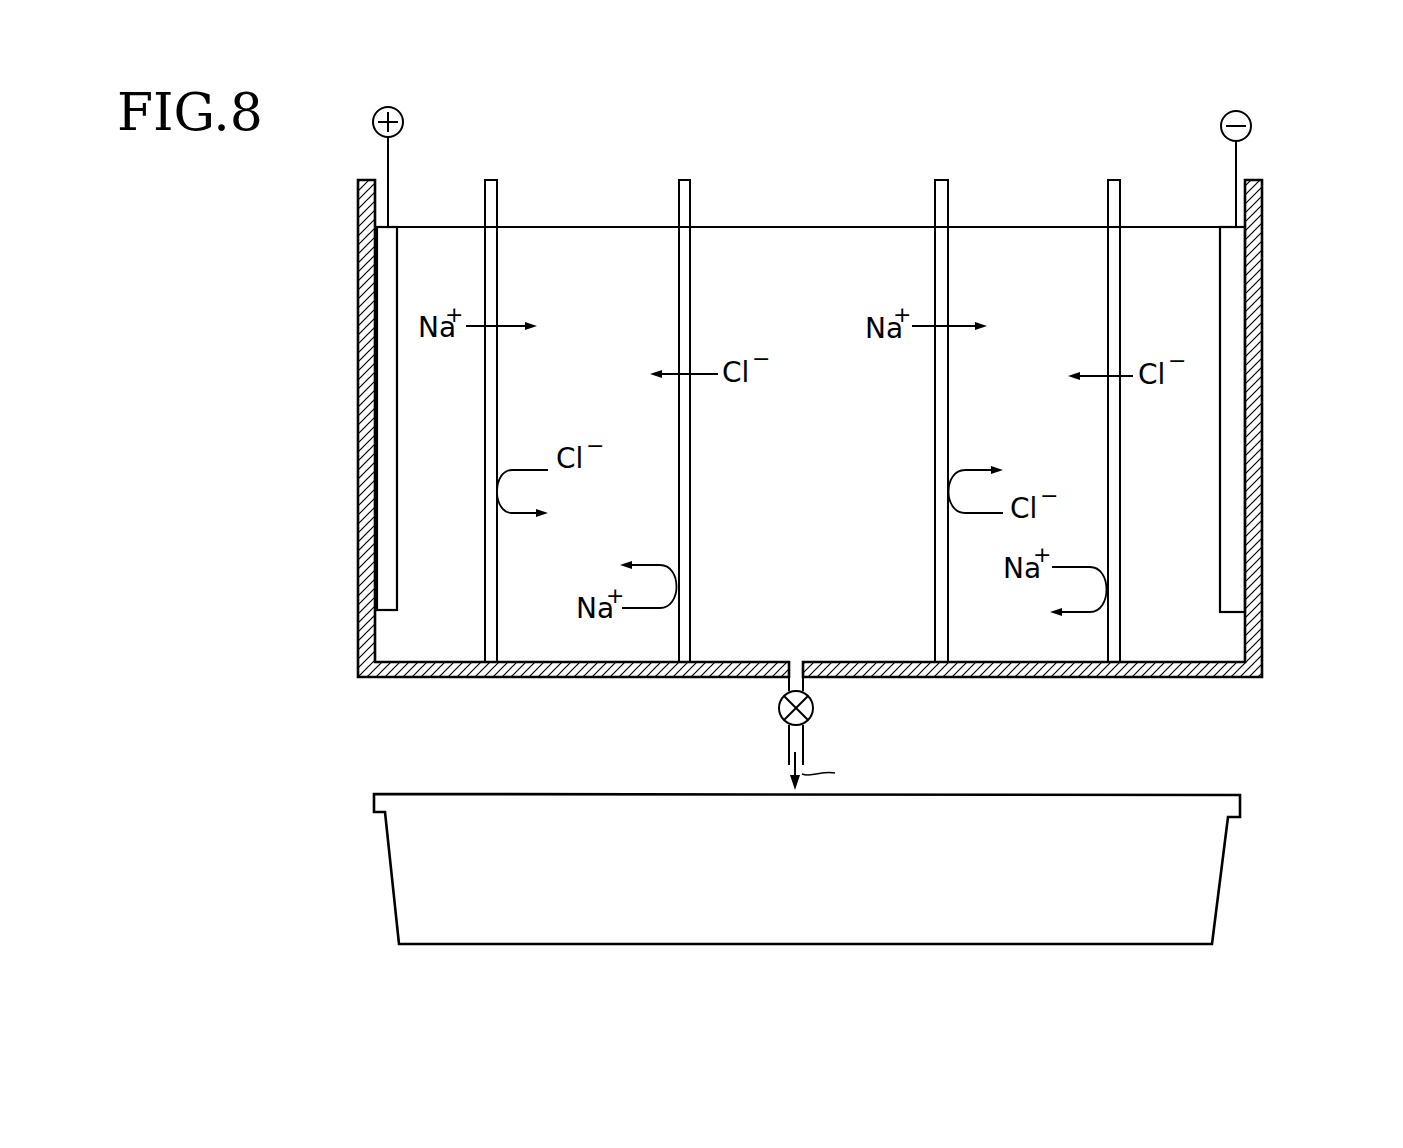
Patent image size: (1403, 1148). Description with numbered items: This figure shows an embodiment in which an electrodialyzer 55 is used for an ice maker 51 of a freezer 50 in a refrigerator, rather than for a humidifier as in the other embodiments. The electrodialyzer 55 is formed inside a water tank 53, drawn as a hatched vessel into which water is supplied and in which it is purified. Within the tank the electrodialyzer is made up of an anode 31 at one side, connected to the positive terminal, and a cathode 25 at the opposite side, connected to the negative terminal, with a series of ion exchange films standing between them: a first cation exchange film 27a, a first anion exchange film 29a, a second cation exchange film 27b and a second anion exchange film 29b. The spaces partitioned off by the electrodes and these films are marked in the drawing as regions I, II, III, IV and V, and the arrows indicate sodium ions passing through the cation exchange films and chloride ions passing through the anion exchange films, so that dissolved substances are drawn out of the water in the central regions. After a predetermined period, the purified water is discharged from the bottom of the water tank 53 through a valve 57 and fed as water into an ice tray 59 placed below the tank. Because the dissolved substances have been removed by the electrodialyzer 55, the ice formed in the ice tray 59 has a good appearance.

The freezer 50 is at (826, 157).
The ice maker 51 is at (300, 385).
The water tank 53 is at (1276, 604).
The electrodialyzer 55 is at (1006, 134).
The cathode 25 is at (1220, 315).
The anode 31 is at (398, 405).
The first cation exchange film 27a is at (497, 395).
The second cation exchange film 27b is at (948, 415).
The first anion exchange film 29a is at (690, 415).
The second anion exchange film 29b is at (1095, 457).
The valve 57 is at (777, 710).
The ice tray 59 is at (1165, 796).
The compartment I is at (1158, 640).
The compartment II is at (990, 638).
The compartment III is at (895, 650).
The compartment IV is at (610, 640).
The compartment V is at (445, 640).